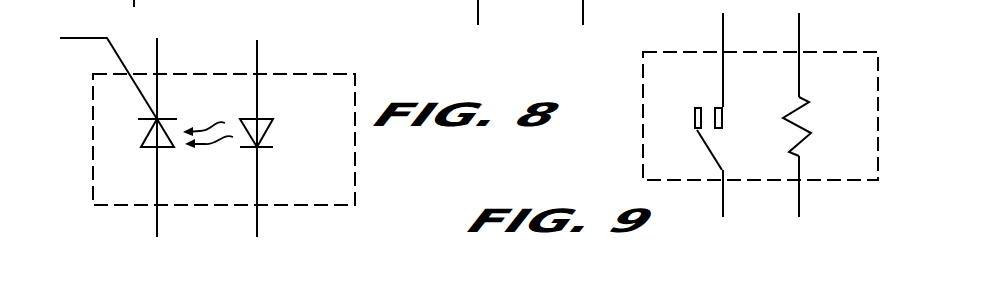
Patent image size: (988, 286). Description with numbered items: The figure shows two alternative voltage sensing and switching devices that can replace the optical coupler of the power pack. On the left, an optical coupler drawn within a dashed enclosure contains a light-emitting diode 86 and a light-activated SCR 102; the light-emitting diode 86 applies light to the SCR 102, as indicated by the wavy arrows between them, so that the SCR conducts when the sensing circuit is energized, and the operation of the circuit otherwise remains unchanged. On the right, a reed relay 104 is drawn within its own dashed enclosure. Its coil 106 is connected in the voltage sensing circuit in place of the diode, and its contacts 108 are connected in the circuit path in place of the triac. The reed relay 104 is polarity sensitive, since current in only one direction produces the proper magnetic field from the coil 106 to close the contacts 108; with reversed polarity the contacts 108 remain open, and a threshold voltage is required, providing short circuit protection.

In FIG. 8, the light-activated SCR 102 is at (140, 147).
In FIG. 8, the light-emitting diode 86 is at (267, 135).
In FIG. 9, the reed relay 104 is at (849, 51).
In FIG. 9, the coil 106 is at (835, 123).
In FIG. 9, the contacts 108 is at (702, 143).